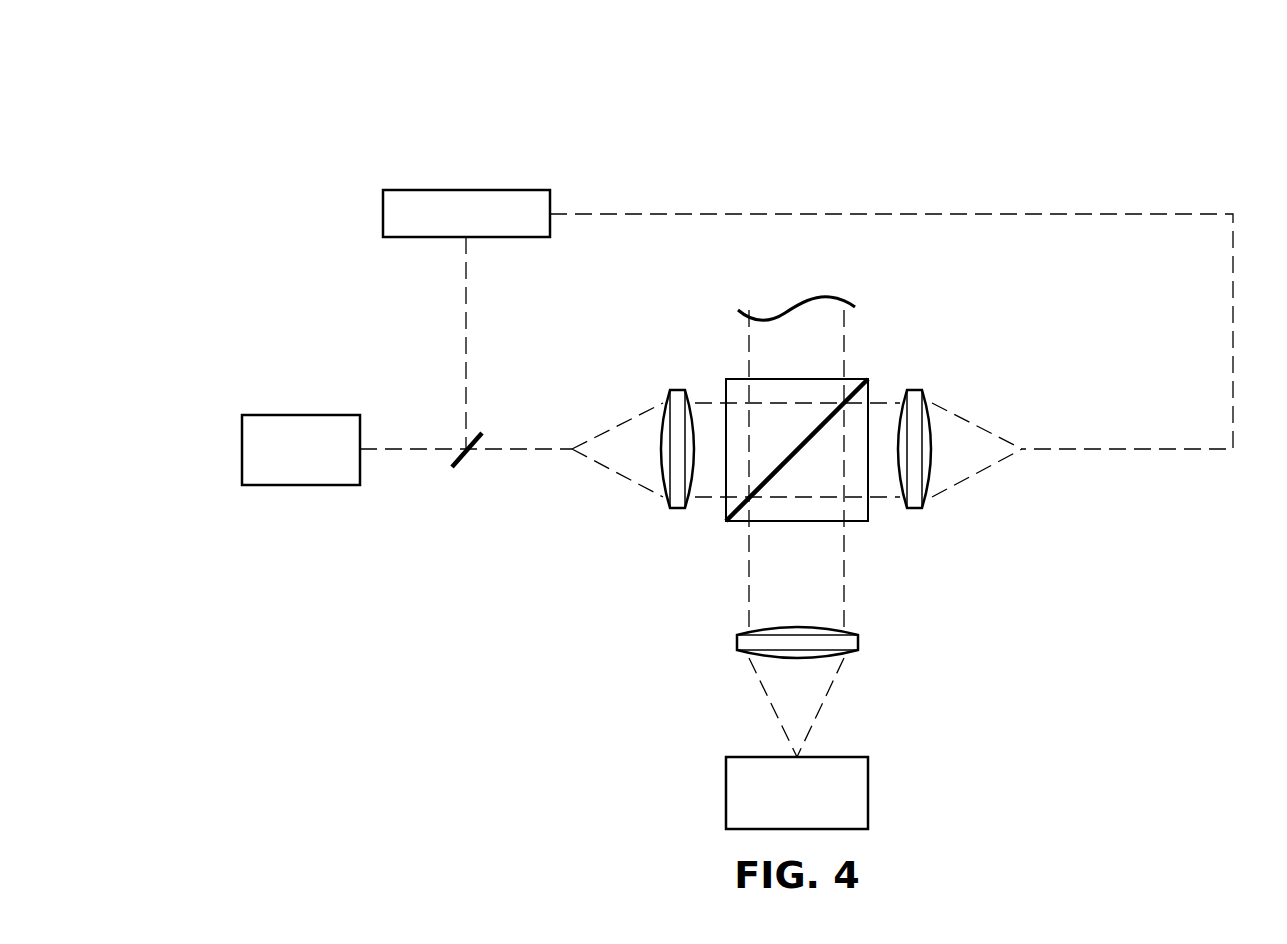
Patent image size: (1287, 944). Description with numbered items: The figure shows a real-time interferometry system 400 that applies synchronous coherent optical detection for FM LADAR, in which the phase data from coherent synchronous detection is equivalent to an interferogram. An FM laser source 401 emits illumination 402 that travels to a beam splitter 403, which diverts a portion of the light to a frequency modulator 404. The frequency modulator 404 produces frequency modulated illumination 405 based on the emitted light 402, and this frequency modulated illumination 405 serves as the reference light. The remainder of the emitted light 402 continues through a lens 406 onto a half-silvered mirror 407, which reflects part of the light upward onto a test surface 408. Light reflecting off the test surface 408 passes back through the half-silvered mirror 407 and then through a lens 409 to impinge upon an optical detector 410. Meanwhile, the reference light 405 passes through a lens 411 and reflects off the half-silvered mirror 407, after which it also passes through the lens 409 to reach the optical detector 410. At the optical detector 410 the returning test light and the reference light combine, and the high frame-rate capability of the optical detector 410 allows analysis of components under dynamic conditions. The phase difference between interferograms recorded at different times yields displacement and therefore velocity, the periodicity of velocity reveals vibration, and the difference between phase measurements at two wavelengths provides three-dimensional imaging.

The real-time interferometry system 400 is at (506, 88).
The FM laser source 401 is at (241, 463).
The illumination 402 is at (427, 451).
The beam splitter 403 is at (463, 456).
The frequency modulator 404 is at (383, 213).
The frequency modulated illumination 405 is at (893, 213).
The lens 406 is at (678, 511).
The half-silvered mirror 407 is at (797, 523).
The test surface 408 is at (801, 306).
The lens 409 is at (736, 638).
The optical detector 410 is at (725, 792).
The lens 411 is at (917, 511).